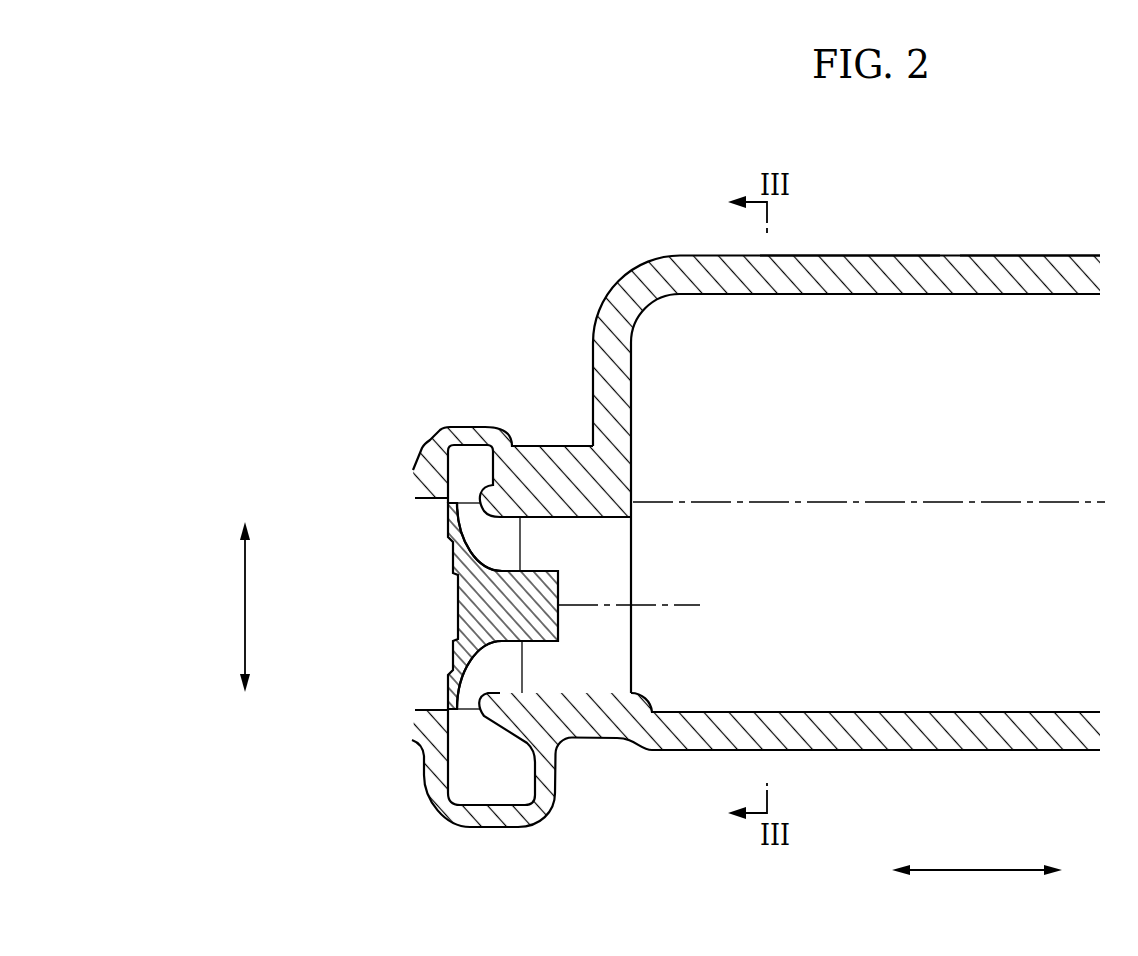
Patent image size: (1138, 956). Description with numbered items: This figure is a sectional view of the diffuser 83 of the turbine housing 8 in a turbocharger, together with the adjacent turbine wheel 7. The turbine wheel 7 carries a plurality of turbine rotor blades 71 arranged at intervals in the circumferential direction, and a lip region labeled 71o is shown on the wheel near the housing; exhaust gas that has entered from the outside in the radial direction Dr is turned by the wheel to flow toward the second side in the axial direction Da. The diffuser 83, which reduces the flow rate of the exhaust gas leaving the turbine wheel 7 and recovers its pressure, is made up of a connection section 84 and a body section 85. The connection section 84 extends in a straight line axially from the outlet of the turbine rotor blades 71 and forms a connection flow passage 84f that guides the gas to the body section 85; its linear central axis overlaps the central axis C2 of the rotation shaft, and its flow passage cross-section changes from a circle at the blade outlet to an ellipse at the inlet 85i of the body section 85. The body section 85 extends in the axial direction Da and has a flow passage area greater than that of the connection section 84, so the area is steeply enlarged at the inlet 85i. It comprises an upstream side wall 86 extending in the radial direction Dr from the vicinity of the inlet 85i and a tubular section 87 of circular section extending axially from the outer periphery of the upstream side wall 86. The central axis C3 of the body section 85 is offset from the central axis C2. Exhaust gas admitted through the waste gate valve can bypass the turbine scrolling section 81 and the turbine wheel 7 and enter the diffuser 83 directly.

The turbine wheel 7 is at (467, 590).
The turbine rotor blades 71 is at (497, 528).
The outer lip of seal 71o is at (523, 663).
The turbine housing 8 is at (548, 818).
The turbine scrolling section 81 is at (471, 820).
The diffuser 83 is at (836, 451).
The connection section 84 is at (565, 480).
The connection flow passage 84f is at (620, 570).
The body section 85 is at (855, 307).
The inlet of the body section 85i is at (630, 652).
The upstream side wall 86 is at (597, 367).
The tubular section 87 is at (1045, 262).
The central axis of the rotation shaft C2 is at (680, 607).
The central axis of the body section C3 is at (1050, 500).
The radial direction Dr is at (229, 607).
The axial direction Da is at (977, 887).